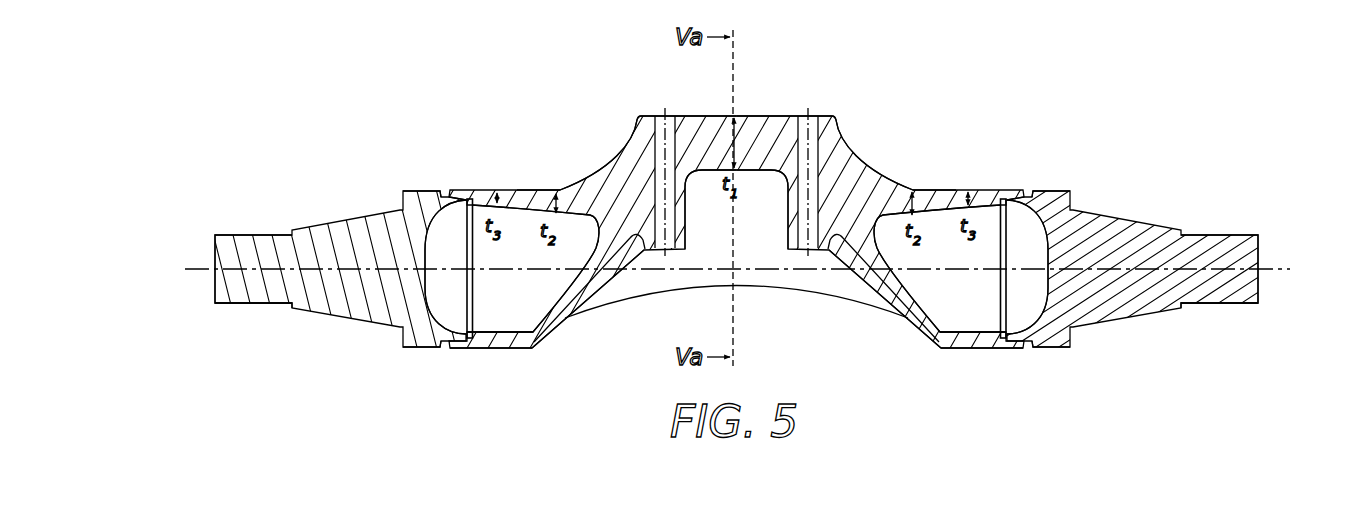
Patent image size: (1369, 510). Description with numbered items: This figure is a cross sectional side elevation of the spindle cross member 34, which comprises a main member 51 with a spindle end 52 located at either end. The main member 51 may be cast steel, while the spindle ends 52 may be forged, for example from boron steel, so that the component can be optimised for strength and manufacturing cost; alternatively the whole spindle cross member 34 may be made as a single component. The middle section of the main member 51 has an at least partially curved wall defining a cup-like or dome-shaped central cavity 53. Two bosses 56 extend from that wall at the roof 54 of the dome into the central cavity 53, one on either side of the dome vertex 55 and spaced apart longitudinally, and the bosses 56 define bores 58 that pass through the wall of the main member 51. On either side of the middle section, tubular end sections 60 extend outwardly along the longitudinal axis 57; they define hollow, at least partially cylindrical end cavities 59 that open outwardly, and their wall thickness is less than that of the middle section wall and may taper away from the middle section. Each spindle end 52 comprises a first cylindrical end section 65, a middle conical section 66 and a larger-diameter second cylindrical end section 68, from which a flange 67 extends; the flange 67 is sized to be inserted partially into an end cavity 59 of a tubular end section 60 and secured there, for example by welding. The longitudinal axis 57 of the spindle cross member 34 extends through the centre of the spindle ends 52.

The spindle cross member 34 is at (841, 80).
The main member 51 is at (641, 116).
The spindle end 52 is at (215, 245).
The central cavity 53 is at (752, 232).
The roof 54 is at (718, 162).
The dome vertex 55 is at (757, 167).
The boss 56 is at (640, 252).
The longitudinal axis 57 is at (193, 270).
The bore 58 is at (652, 152).
The end cavity 59 is at (523, 240).
The tubular end section 60 is at (490, 349).
The first cylindrical end section 65 is at (233, 294).
The middle conical section 66 is at (348, 218).
The flange 67 is at (468, 199).
The second cylindrical end section 68 is at (412, 191).